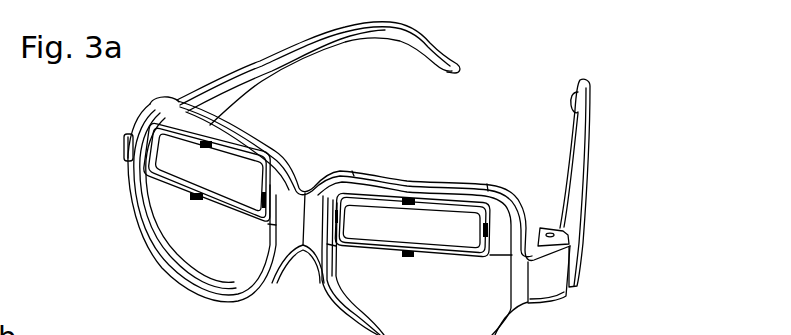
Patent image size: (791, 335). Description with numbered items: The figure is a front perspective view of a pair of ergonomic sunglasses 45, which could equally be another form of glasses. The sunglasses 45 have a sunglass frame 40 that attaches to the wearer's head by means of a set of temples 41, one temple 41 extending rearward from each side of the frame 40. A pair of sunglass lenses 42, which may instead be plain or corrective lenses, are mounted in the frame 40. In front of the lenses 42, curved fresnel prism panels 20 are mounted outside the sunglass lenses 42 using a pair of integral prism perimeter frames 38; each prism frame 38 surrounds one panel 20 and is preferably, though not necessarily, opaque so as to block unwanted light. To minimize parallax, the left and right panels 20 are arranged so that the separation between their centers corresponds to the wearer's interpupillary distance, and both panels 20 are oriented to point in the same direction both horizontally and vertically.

The curved fresnel prism panel 20 is at (234, 192).
The prism perimeter frame 38 is at (144, 176).
The sunglass frame 40 is at (306, 186).
The temple 41 is at (253, 78).
The sunglass lens 42 is at (235, 256).
The ergonomic sunglasses 45 is at (118, 118).